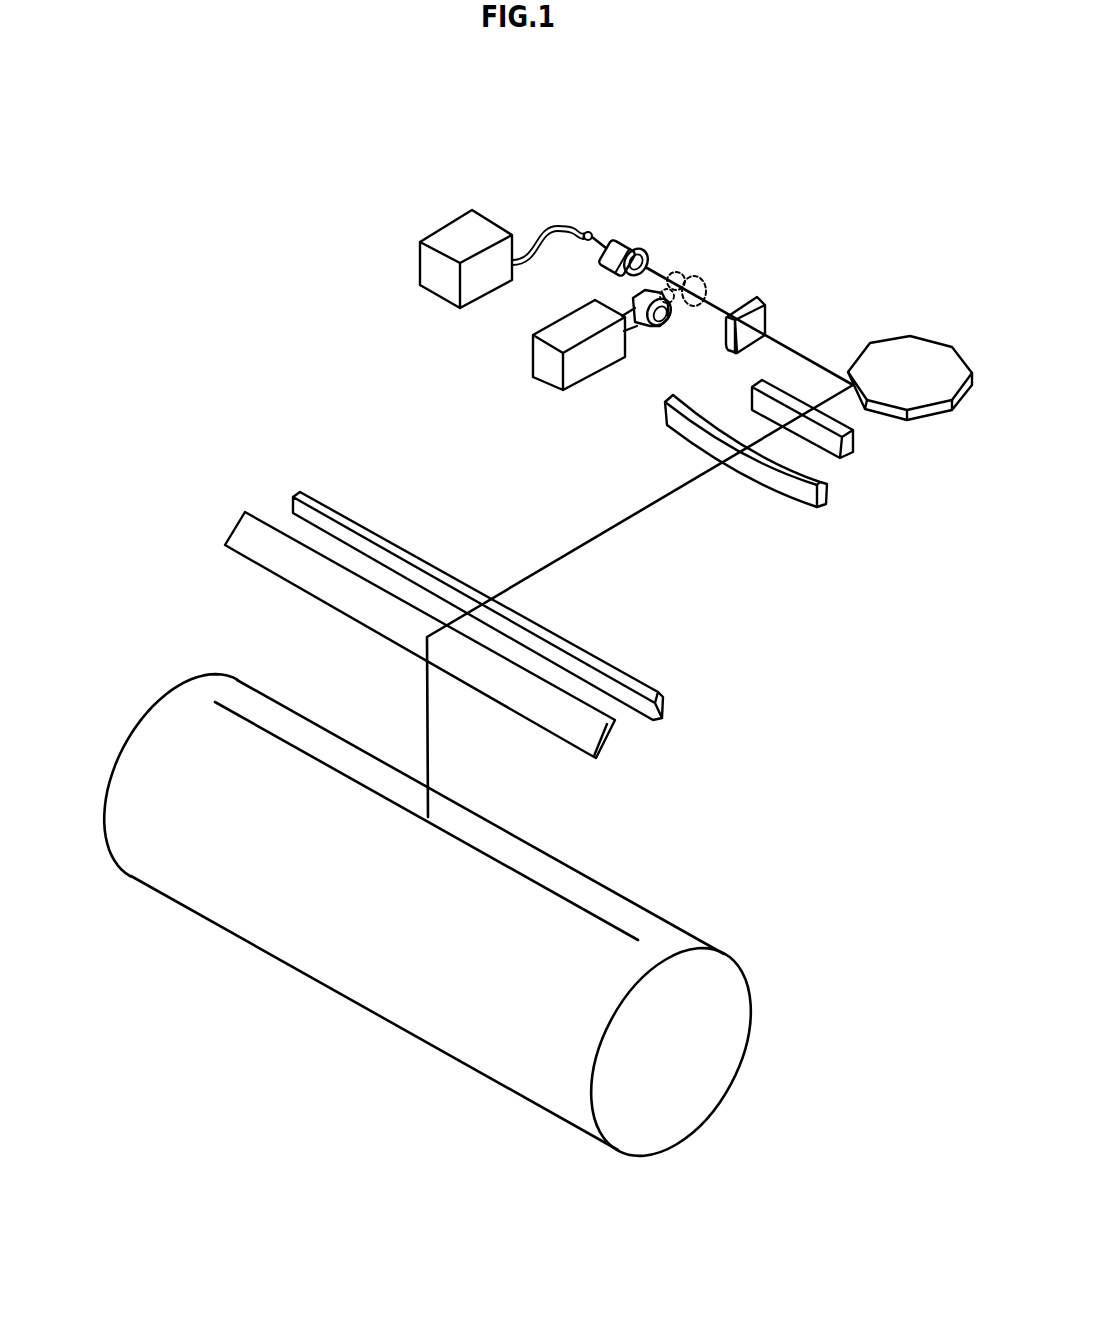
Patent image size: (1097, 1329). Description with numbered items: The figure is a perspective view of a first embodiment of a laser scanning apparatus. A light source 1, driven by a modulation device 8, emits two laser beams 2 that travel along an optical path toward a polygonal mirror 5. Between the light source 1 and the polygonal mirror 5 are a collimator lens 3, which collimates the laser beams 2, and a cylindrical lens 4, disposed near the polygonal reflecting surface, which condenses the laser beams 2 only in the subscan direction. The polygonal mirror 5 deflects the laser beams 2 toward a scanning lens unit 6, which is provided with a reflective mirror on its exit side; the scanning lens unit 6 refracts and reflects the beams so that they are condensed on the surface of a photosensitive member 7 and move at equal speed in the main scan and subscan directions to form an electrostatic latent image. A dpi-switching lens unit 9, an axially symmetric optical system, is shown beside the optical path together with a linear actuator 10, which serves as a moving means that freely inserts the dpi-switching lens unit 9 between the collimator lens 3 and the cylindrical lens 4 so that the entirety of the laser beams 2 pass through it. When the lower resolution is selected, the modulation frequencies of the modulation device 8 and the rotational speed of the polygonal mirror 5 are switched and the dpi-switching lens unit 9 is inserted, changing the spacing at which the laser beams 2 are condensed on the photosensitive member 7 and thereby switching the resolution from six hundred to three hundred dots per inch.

The light source 1 is at (589, 231).
The laser beams 2 is at (605, 237).
The collimator lens 3 is at (630, 246).
The cylindrical lens 4 is at (765, 304).
The polygonal mirror 5 is at (917, 352).
The scanning lens unit 6 is at (663, 697).
The photosensitive member 7 is at (675, 943).
The modulation device 8 is at (455, 237).
The dpi-switching lens unit 9 is at (687, 276).
The linear actuator 10 is at (548, 358).